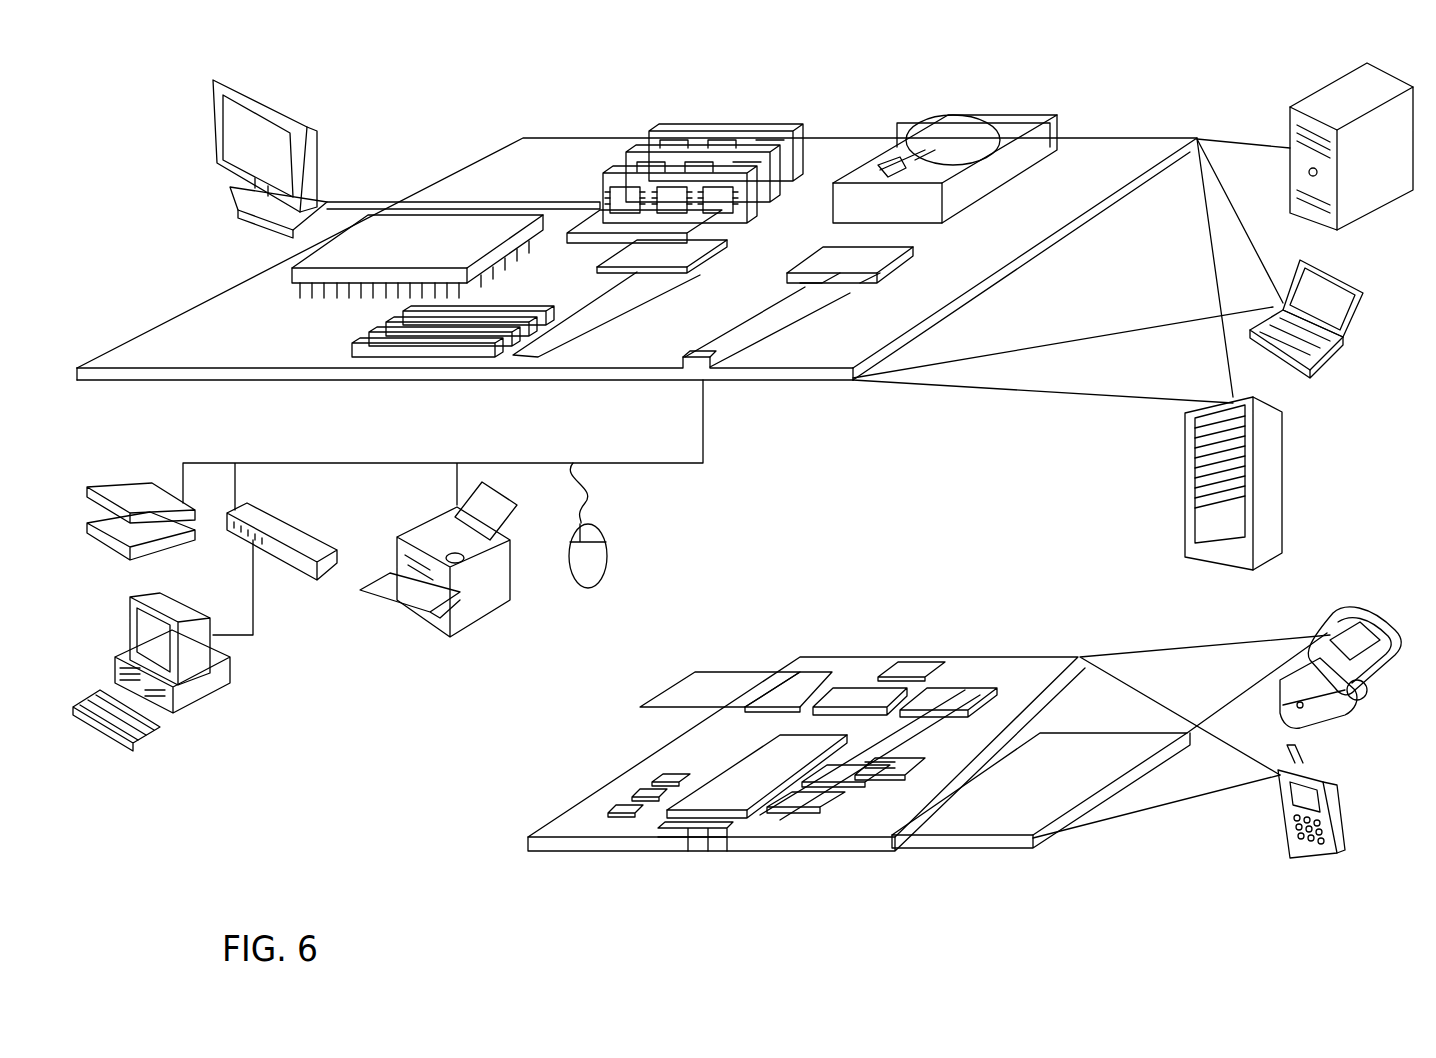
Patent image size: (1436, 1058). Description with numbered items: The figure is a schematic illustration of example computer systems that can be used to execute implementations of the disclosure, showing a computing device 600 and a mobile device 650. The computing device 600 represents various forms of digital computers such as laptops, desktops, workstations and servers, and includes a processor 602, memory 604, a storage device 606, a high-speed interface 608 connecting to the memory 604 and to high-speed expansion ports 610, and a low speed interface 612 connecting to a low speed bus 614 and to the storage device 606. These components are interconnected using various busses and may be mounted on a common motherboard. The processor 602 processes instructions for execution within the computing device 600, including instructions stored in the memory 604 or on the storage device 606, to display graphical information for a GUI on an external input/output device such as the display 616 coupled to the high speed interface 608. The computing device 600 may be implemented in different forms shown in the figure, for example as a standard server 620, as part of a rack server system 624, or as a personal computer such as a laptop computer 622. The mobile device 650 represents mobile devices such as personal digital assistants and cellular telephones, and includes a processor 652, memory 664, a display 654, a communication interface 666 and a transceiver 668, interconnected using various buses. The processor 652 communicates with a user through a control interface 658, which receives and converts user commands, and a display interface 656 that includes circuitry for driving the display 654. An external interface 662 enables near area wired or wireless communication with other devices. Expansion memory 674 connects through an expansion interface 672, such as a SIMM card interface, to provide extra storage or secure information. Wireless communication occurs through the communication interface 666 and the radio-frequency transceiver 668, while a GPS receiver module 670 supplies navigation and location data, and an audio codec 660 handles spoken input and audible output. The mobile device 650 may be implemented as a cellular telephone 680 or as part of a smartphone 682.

The computing device 600 is at (438, 107).
The processor 602 is at (248, 272).
The memory 604 is at (673, 132).
The storage device 606 is at (937, 122).
The high-speed interface 608 is at (633, 253).
The high-speed expansion ports 610 is at (365, 340).
The low speed interface 612 is at (830, 260).
The low speed bus 614 is at (703, 367).
The display 616 is at (227, 80).
The standard server 620 is at (1293, 122).
The laptop computer 622 is at (1357, 255).
The rack server system 624 is at (1187, 510).
The mobile device 650 is at (500, 850).
The processor 652 is at (743, 820).
The display 654 is at (993, 823).
The display interface 656 is at (803, 827).
The control interface 658 is at (825, 780).
The audio codec 660 is at (872, 758).
The external interface 662 is at (688, 850).
The memory 664 is at (633, 793).
The communication interface 666 is at (862, 700).
The transceiver 668 is at (950, 700).
The GPS receiver module 670 is at (920, 653).
The expansion interface 672 is at (777, 670).
The expansion memory 674 is at (707, 673).
The cellular telephone 680 is at (1322, 575).
The smartphone 682 is at (1280, 810).